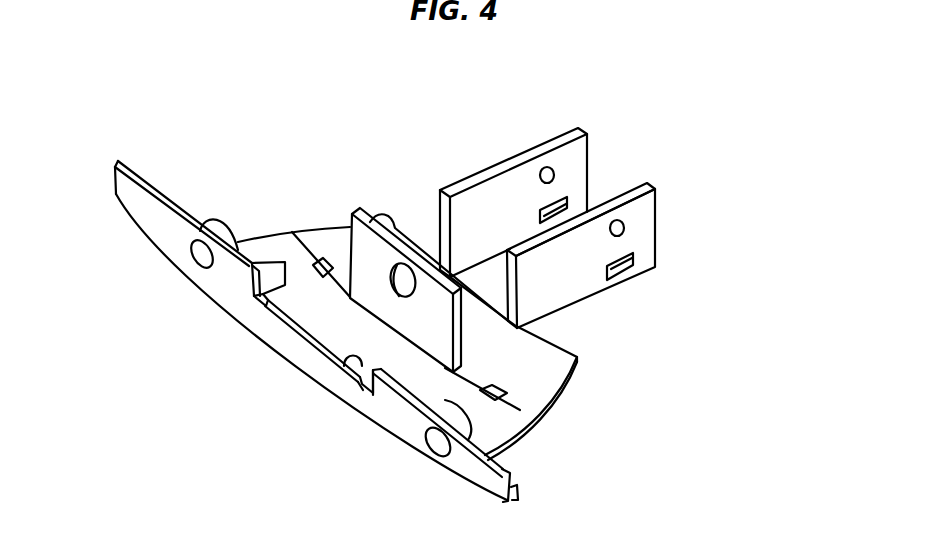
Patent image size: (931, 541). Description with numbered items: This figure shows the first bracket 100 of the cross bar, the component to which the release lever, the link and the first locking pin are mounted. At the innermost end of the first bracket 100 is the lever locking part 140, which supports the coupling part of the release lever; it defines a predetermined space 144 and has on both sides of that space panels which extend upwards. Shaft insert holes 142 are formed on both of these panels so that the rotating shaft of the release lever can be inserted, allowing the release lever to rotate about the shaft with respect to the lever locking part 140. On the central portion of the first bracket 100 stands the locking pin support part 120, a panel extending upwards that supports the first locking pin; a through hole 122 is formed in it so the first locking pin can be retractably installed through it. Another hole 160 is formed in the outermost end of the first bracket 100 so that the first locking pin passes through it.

The first bracket 100 is at (573, 432).
The locking pin support part 120 is at (365, 257).
The through hole 122 is at (410, 286).
The lever locking part 140 is at (640, 223).
The shaft insert holes 142 is at (621, 231).
The predetermined space 144 is at (603, 181).
The hole 160 is at (354, 371).